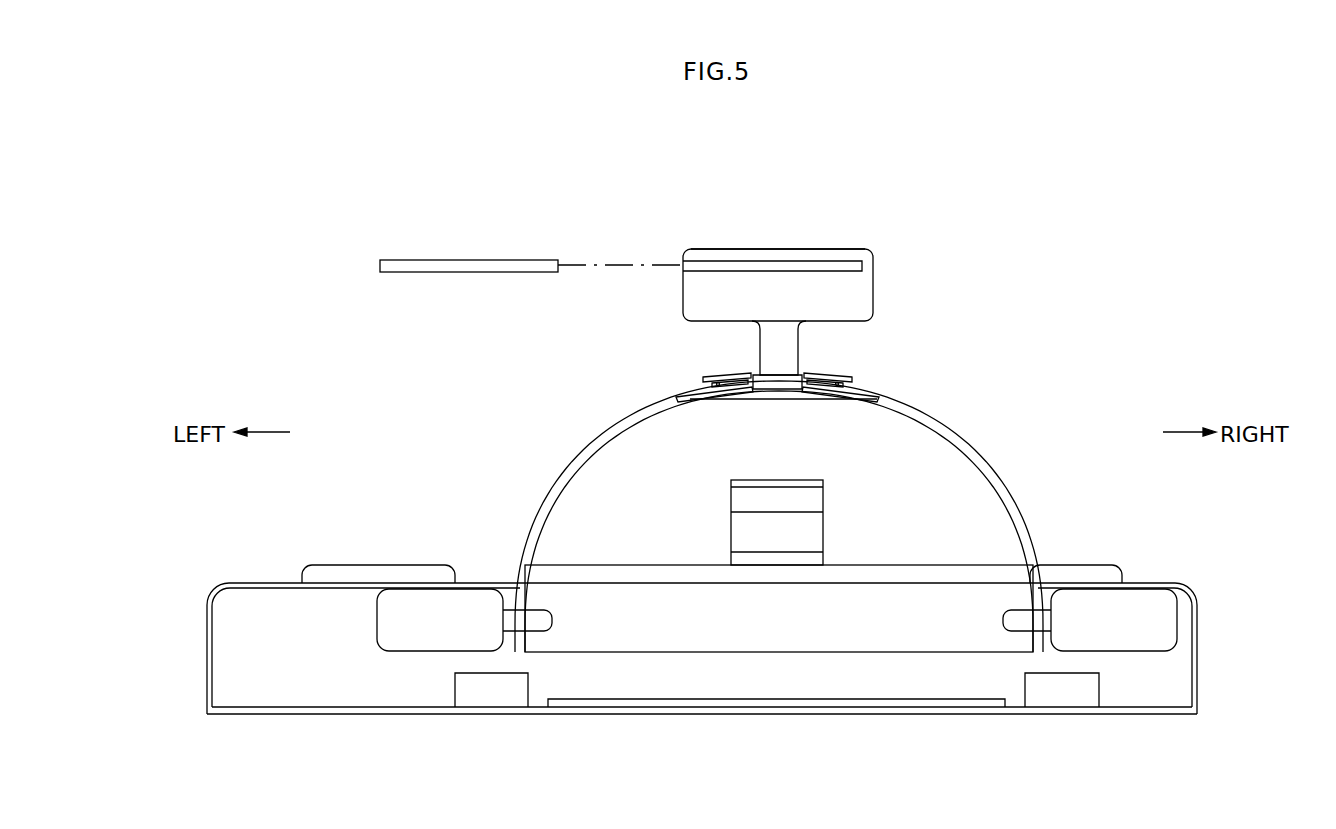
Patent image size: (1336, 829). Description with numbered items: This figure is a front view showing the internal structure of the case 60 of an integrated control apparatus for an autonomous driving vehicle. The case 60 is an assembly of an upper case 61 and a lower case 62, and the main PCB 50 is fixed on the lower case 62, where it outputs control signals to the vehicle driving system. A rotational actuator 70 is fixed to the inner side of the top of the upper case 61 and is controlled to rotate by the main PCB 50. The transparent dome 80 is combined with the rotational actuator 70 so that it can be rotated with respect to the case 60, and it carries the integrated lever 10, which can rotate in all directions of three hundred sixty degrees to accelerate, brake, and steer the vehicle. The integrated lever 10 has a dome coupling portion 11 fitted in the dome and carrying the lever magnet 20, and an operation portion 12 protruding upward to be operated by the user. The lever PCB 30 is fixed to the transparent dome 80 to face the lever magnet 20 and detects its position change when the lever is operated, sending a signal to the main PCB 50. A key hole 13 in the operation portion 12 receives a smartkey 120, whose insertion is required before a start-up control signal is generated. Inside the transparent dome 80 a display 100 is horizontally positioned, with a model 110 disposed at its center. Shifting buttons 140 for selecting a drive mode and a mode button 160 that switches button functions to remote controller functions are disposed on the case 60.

The integrated lever 10 is at (838, 236).
The dome coupling portion 11 is at (828, 384).
The operation portion 12 is at (786, 249).
The key hole 13 is at (711, 262).
The lever magnet 20 is at (781, 377).
The lever PCB 30 is at (835, 404).
The main PCB 50 is at (735, 699).
The case 60 is at (1130, 724).
The upper case 61 is at (217, 588).
The lower case 62 is at (445, 713).
The rotational actuator 70 is at (1163, 623).
The transparent dome 80 is at (548, 493).
The display 100 is at (940, 573).
The model 110 is at (740, 522).
The smartkey 120 is at (482, 262).
The shifting buttons 140 is at (358, 570).
The mode button 160 is at (1088, 573).